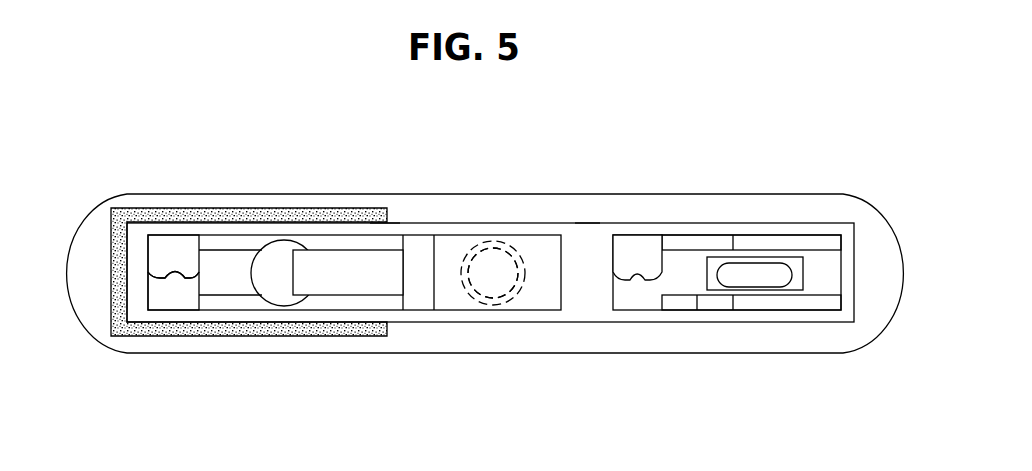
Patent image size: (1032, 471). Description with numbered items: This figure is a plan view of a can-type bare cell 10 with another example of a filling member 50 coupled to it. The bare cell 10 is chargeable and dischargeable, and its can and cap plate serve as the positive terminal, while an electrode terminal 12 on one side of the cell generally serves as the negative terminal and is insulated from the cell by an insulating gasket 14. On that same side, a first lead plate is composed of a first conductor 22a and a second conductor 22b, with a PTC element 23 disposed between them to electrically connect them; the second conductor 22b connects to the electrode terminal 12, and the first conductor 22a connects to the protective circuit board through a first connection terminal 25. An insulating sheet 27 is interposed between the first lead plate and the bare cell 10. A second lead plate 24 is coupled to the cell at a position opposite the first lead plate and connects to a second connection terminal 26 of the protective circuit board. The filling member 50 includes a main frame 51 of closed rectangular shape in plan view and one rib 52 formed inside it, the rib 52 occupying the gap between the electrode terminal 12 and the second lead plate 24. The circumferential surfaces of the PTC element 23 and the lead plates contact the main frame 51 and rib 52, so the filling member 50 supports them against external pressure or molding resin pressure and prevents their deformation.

The bare cell 10 is at (764, 210).
The electrode terminal 12 is at (471, 298).
The insulating gasket 14 is at (490, 243).
The first conductor 22a is at (175, 300).
The second conductor 22b is at (541, 292).
The PTC element 23 is at (318, 255).
The second lead plate 24 is at (823, 292).
The first connection terminal 25 is at (171, 245).
The second connection terminal 26 is at (635, 245).
The insulating sheet 27 is at (232, 215).
The filling member 50 is at (418, 218).
The main frame 51 is at (378, 228).
The rib 52 is at (586, 255).